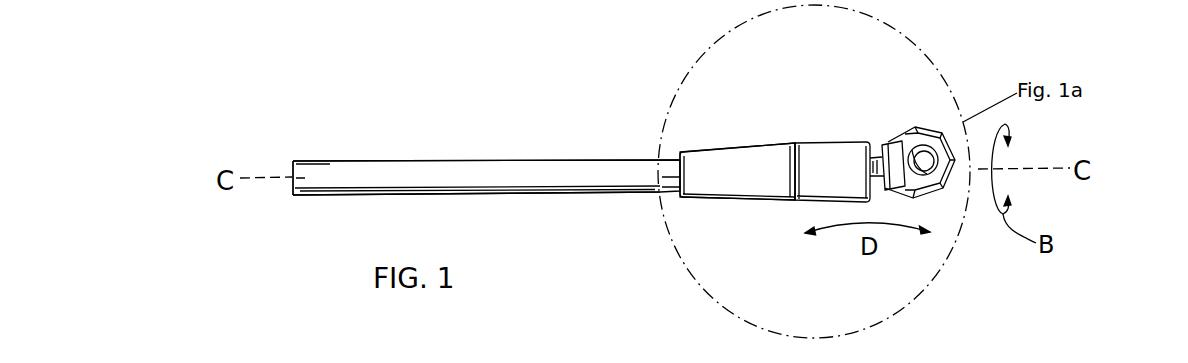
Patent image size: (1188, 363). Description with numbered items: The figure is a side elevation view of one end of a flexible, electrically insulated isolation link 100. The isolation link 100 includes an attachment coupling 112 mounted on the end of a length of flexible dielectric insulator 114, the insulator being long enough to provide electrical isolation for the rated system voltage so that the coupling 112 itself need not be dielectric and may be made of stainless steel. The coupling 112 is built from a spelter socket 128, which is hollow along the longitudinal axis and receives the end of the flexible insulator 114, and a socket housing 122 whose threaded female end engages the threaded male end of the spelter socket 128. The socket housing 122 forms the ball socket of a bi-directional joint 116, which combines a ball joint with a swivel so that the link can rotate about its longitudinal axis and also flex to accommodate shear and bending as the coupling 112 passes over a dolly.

The isolation link 100 is at (527, 110).
The flexible dielectric insulator 114 is at (417, 170).
The attachment coupling 112 is at (822, 78).
The spelter socket 128 is at (778, 155).
The socket housing 122 is at (817, 157).
The bi-directional joint 116 is at (895, 105).